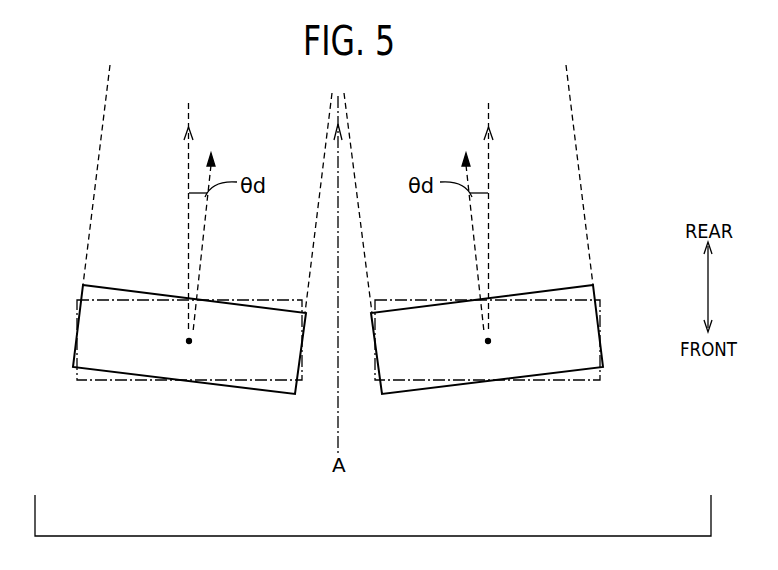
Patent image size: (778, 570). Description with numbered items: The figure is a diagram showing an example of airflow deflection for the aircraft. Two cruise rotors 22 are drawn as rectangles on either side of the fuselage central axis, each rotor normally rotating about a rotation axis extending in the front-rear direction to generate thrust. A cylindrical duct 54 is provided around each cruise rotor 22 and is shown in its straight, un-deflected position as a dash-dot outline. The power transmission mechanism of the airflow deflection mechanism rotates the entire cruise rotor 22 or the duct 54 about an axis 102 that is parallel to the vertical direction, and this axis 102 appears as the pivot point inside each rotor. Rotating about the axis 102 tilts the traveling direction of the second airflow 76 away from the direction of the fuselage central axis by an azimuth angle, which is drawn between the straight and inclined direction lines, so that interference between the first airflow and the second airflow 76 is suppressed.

The cruise rotor 22 is at (210, 390).
The duct 54 is at (156, 360).
The second airflow 76 is at (97, 165).
The axis 102 is at (186, 341).